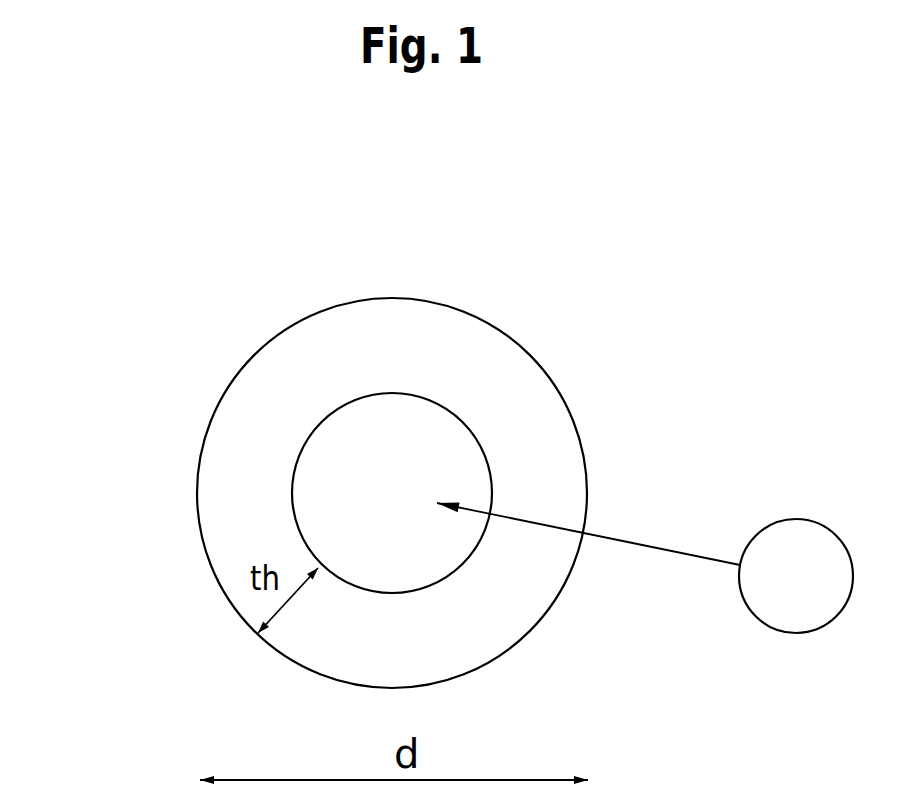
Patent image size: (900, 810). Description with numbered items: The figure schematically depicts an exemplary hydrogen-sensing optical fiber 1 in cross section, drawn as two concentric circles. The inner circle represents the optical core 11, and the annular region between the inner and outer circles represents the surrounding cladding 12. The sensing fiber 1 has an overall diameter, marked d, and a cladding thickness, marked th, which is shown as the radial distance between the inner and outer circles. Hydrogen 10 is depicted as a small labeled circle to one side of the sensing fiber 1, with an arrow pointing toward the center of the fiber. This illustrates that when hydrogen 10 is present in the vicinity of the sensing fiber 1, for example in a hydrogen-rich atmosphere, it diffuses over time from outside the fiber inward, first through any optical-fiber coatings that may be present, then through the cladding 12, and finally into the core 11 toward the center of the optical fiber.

The hydrogen-sensing optical fiber 1 is at (110, 297).
The hydrogen 10 is at (768, 632).
The optical core 11 is at (455, 437).
The cladding 12 is at (553, 460).